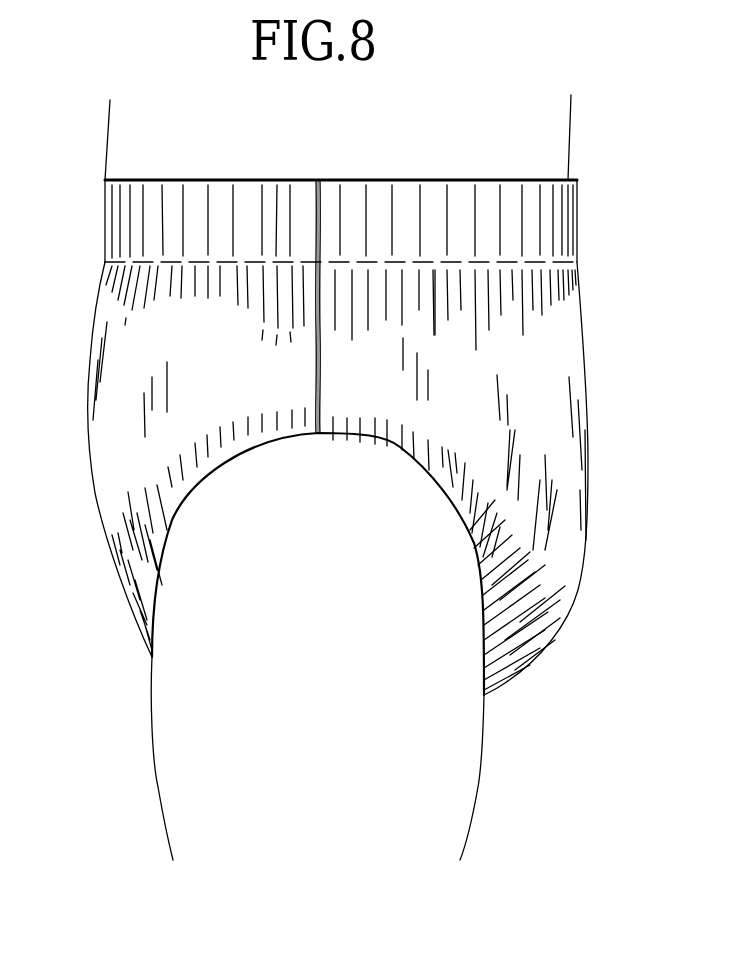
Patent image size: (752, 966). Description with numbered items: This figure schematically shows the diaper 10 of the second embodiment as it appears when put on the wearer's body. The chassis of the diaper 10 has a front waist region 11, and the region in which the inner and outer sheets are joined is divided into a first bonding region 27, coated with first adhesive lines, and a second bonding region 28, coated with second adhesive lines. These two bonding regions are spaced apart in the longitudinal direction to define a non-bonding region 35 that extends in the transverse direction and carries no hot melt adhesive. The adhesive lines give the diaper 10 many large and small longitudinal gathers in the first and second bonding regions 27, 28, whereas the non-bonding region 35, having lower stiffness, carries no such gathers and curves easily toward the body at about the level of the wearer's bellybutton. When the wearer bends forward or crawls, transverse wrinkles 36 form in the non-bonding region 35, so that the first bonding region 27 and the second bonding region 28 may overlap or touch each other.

The diaper 10 is at (346, 477).
The front waist region 11 is at (110, 492).
The first bonding region 27 is at (590, 181).
The second bonding region 28 is at (562, 447).
The non-bonding region 35 is at (555, 260).
The wrinkles 36 is at (274, 262).